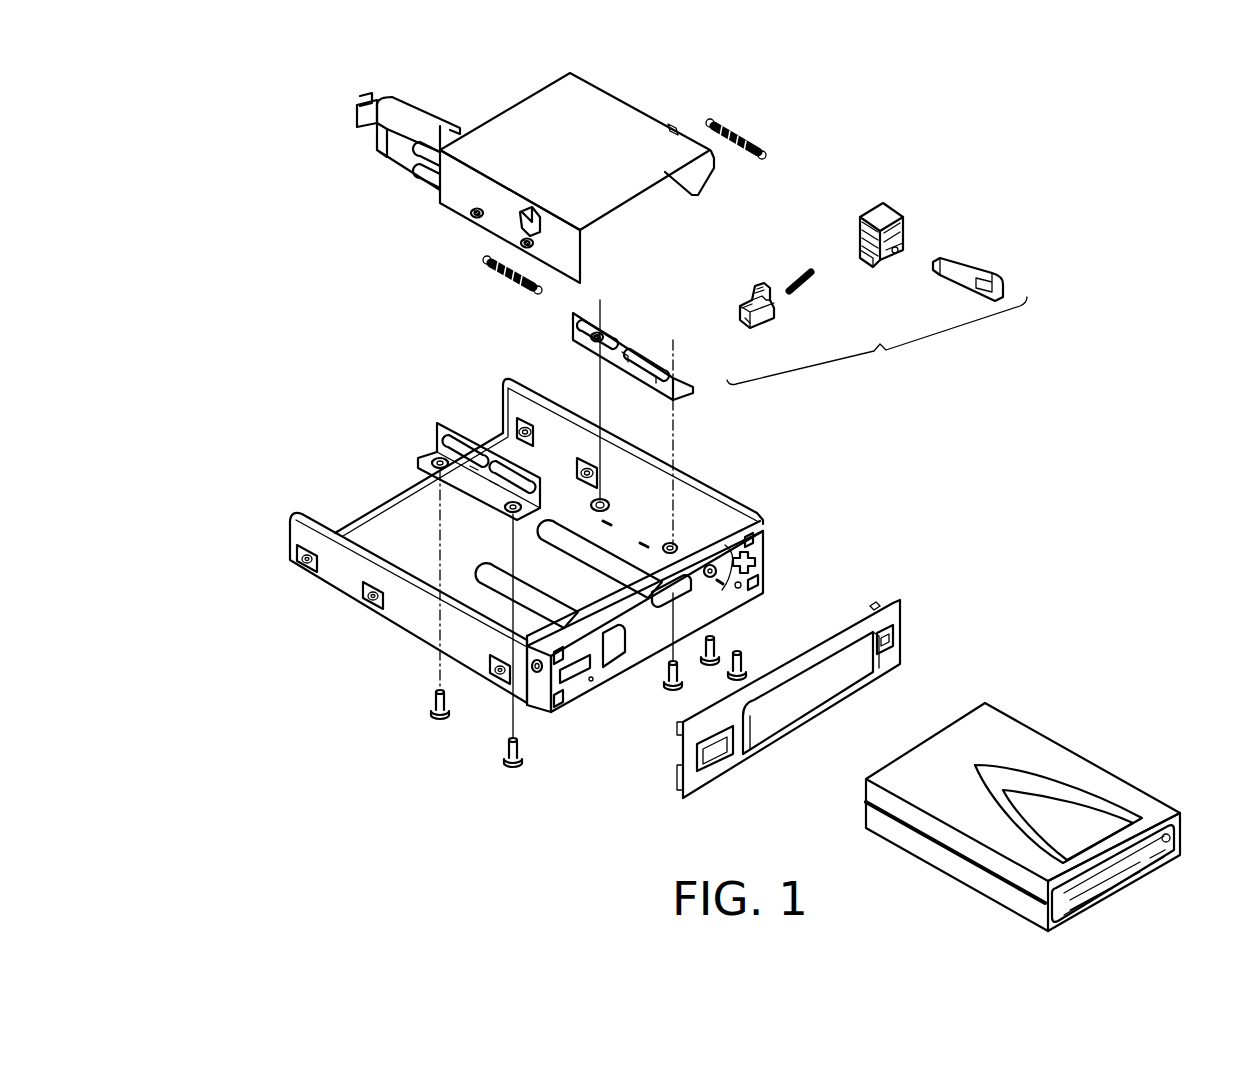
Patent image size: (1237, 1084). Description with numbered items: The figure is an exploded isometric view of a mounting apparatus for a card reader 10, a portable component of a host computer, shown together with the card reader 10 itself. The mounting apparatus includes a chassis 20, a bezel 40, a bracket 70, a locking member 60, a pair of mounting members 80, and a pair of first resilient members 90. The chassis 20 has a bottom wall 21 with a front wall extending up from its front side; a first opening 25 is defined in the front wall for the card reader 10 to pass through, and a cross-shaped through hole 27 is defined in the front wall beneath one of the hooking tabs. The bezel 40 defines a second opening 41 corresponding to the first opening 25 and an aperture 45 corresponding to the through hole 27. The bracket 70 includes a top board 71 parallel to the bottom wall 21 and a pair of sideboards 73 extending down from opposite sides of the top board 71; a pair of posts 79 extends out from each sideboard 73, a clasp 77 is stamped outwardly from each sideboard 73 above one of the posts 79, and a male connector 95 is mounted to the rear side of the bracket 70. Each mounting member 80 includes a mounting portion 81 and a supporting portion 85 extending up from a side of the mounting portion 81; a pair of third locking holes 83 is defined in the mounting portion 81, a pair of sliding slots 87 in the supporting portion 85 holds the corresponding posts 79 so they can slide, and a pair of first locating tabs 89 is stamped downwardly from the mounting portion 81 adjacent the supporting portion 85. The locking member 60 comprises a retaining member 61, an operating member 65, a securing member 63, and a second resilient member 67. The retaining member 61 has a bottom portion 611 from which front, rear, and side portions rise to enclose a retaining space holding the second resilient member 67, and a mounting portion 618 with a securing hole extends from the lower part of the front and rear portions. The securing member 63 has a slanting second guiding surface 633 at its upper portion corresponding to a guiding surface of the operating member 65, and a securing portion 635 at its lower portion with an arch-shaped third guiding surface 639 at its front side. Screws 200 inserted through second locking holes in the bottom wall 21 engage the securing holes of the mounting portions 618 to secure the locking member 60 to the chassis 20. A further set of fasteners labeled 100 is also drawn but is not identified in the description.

The card reader 10 is at (1062, 757).
The chassis 20 is at (545, 545).
The bottom wall 21 is at (397, 525).
The first opening 25 is at (625, 645).
The cross-shaped through hole 27 is at (762, 556).
The bezel 40 is at (768, 701).
The second opening 41 is at (760, 724).
The aperture 45 is at (893, 640).
The locking member 60 is at (845, 275).
The retaining member 61 is at (880, 236).
The bottom portion 611 is at (866, 260).
The mounting portion 618 is at (895, 255).
The securing member 63 is at (719, 301).
The second guiding surface 633 is at (757, 284).
The securing portion 635 is at (742, 306).
The third guiding surface 639 is at (745, 324).
The operating member 65 is at (956, 262).
The second resilient member 67 is at (805, 270).
The bracket 70 is at (504, 179).
The top board 71 is at (626, 127).
The sideboards 73 is at (450, 190).
The clasp 77 is at (517, 222).
The posts 79 is at (467, 218).
The mounting members 80 is at (557, 512).
The mounting portion 81 is at (696, 390).
The third locking holes 83 is at (680, 362).
The supporting portion 85 is at (627, 338).
The sliding slots 87 is at (585, 333).
The first locating tabs 89 is at (636, 378).
The first resilient members 90 is at (516, 288).
The male connector 95 is at (364, 120).
The screws 100 is at (744, 650).
The screws 200 is at (430, 700).